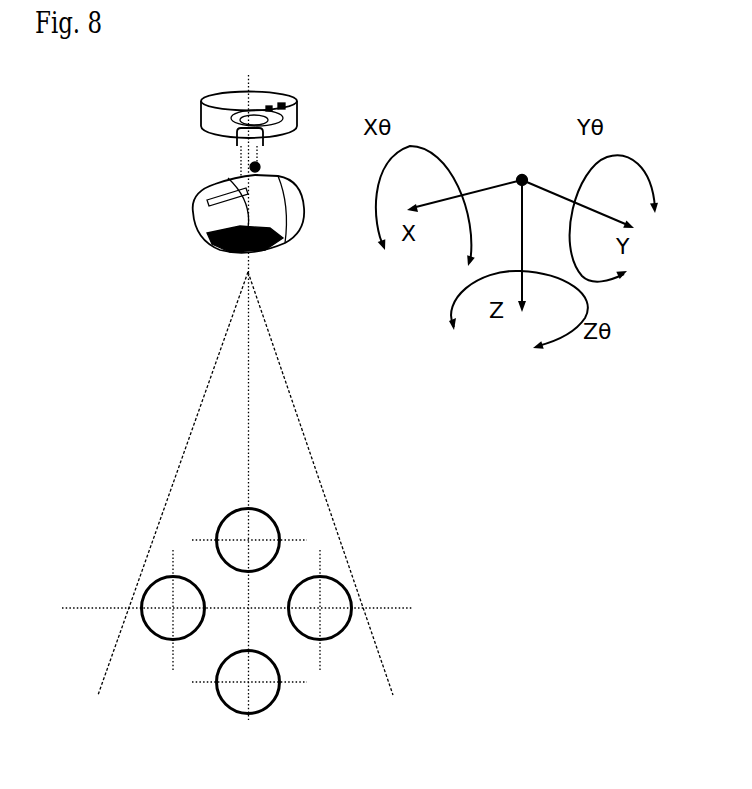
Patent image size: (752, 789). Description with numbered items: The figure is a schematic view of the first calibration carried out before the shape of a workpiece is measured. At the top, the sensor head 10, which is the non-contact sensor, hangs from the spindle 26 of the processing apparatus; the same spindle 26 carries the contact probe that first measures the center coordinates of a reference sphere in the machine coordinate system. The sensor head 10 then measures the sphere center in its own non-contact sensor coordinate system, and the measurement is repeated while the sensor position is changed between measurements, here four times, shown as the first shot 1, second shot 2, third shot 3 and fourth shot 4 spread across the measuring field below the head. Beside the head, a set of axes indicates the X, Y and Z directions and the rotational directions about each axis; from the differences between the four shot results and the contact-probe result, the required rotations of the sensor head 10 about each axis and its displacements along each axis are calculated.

The spindle 26 is at (210, 103).
The sensor head 10 is at (200, 207).
The first measurement shot 1 is at (156, 610).
The second measurement shot 2 is at (329, 610).
The third measurement shot 3 is at (249, 668).
The fourth measurement shot 4 is at (249, 525).